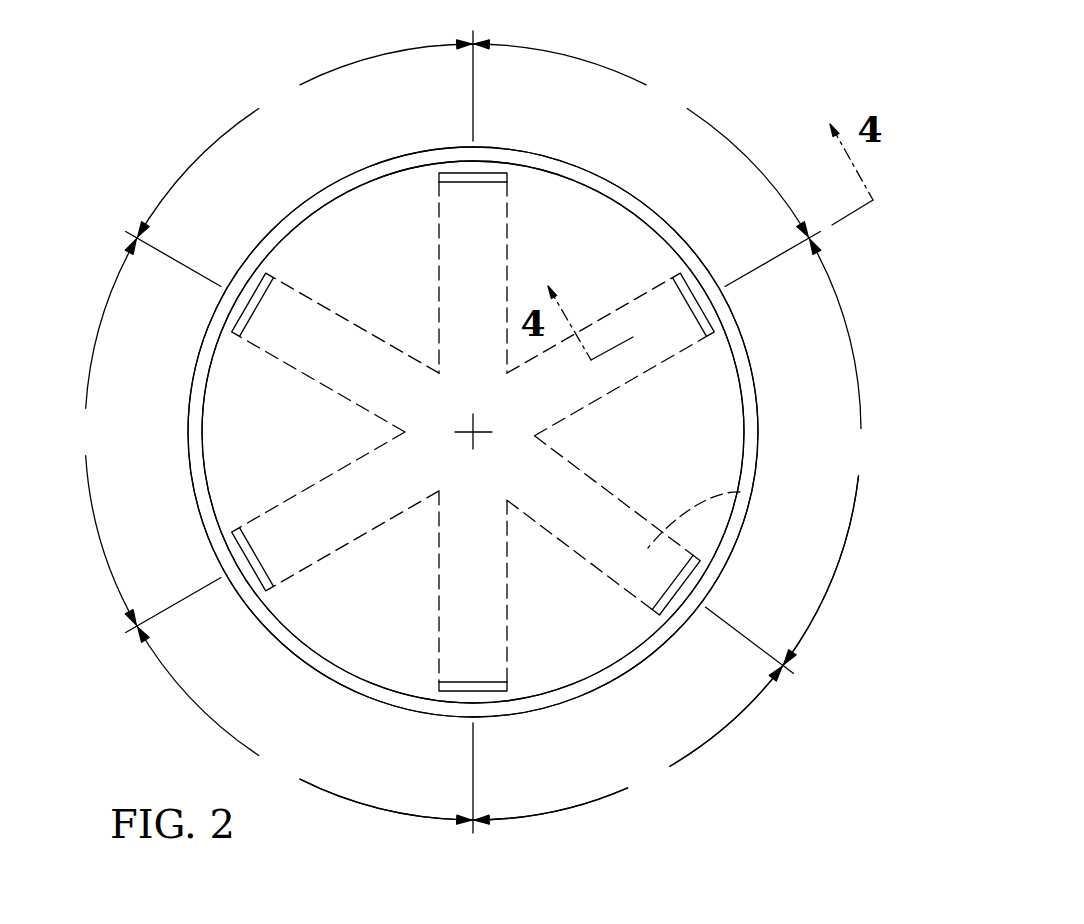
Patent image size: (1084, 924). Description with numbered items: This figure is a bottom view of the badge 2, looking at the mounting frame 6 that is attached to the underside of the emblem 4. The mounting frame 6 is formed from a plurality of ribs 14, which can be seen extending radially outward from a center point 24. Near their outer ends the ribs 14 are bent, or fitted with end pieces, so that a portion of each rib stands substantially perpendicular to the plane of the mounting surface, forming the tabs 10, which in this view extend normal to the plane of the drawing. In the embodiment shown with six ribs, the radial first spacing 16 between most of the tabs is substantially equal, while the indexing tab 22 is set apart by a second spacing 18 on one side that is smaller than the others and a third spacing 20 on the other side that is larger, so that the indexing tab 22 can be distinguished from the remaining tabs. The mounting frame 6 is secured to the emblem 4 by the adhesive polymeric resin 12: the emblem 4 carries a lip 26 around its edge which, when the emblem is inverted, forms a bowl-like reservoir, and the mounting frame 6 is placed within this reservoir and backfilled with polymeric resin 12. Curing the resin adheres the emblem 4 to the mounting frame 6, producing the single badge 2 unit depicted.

The badge 2 is at (775, 396).
The emblem 4 is at (682, 237).
The mounting frame 6 is at (514, 226).
The tabs 10 is at (250, 570).
The polymeric resin 12 is at (372, 622).
The ribs 14 is at (450, 233).
The first spacing 16 is at (464, 432).
The second spacing 18 is at (480, 789).
The third spacing 20 is at (773, 604).
The indexing tab 22 is at (740, 492).
The center point 24 is at (468, 428).
The lip 26 is at (277, 237).